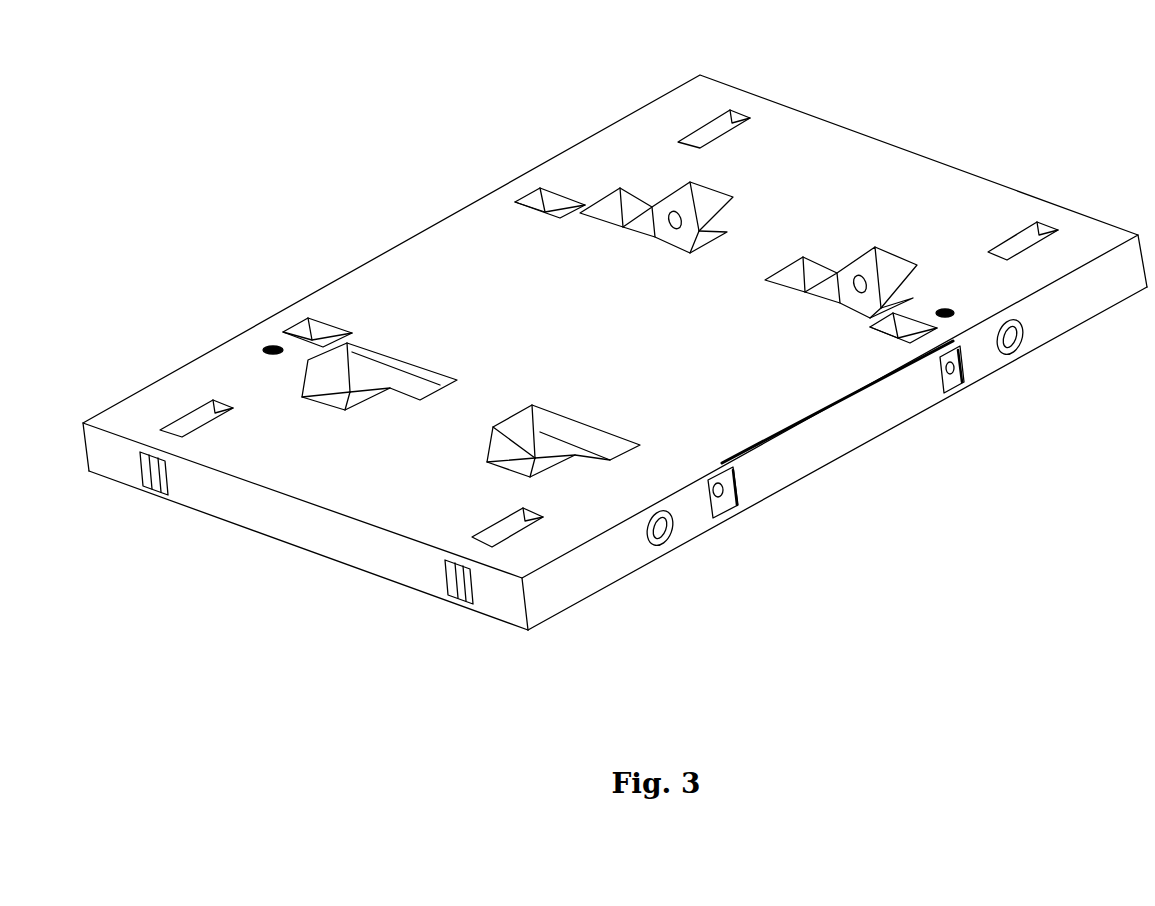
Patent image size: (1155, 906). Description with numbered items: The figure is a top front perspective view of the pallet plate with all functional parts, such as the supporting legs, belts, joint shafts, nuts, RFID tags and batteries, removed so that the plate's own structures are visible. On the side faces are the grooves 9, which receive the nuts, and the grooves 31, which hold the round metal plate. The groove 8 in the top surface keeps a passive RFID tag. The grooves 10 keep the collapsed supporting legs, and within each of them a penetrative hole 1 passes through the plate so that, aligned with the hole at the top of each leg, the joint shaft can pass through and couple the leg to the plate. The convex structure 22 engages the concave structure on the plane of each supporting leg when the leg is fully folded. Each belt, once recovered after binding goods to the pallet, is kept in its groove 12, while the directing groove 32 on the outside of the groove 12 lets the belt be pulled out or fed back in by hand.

The penetrative hole 1 is at (680, 197).
The groove 8 is at (273, 343).
The grooves 9 is at (673, 547).
The grooves 10 is at (603, 195).
The groove 12 is at (577, 185).
The convex structure 22 is at (393, 368).
The grooves 31 is at (735, 513).
The directing groove 32 is at (548, 185).